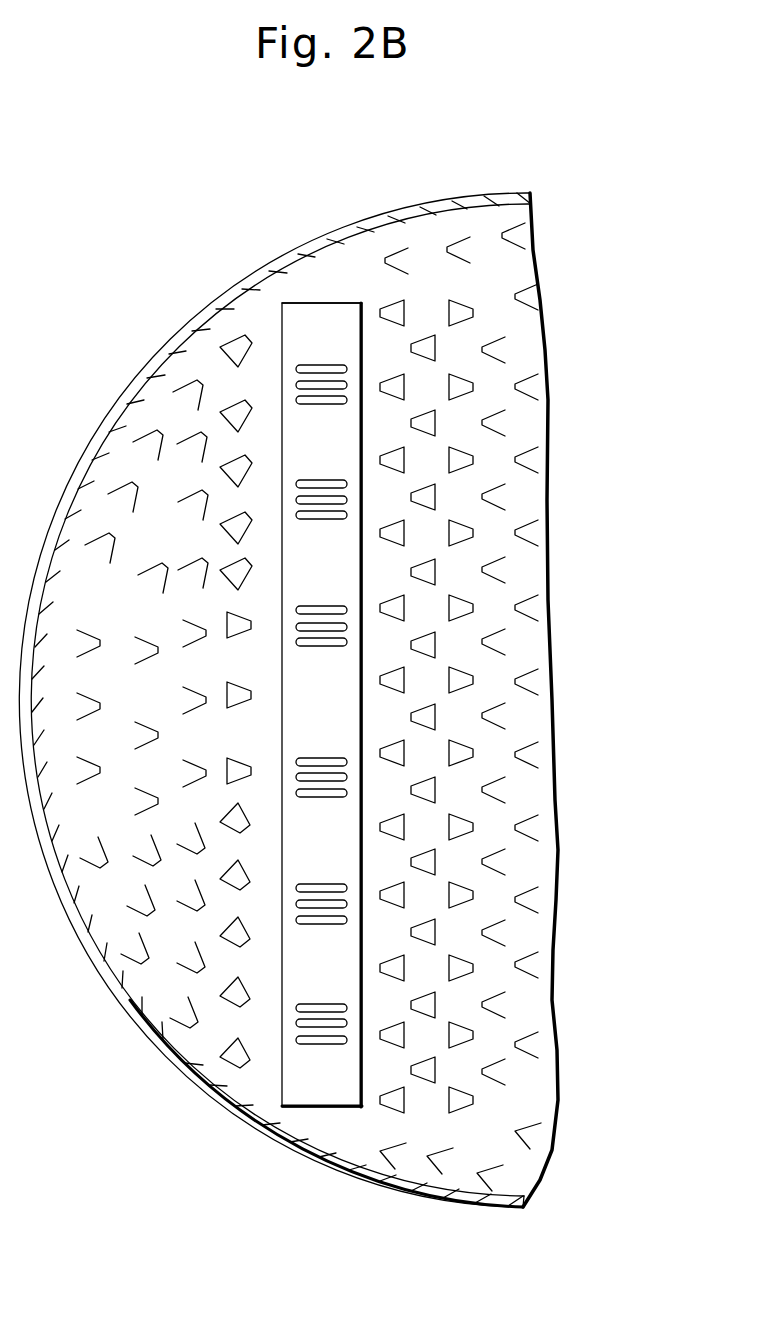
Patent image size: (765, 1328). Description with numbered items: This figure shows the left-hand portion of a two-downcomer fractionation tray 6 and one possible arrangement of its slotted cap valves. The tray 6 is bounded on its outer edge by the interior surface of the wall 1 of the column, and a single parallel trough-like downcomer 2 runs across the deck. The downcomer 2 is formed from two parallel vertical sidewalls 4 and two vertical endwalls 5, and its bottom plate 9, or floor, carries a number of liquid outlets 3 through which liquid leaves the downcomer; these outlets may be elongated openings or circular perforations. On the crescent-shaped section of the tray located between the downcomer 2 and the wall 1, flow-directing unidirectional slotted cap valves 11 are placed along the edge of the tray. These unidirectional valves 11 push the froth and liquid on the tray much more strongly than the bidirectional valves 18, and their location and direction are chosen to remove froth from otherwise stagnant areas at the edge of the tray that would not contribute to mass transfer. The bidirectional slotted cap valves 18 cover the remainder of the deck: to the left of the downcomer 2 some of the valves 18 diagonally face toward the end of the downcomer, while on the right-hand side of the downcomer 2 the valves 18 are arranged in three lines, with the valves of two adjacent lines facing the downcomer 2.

The wall 1 is at (433, 200).
The downcomer 2 is at (311, 1118).
The liquid outlets 3 is at (340, 1045).
The sidewall 4 is at (272, 1073).
The endwall 5 is at (325, 303).
The tray 6 is at (522, 263).
The bottom plate 9 is at (328, 583).
The unidirectional slotted cap valves 11 is at (527, 1042).
The bidirectional slotted cap valves 18 is at (404, 681).